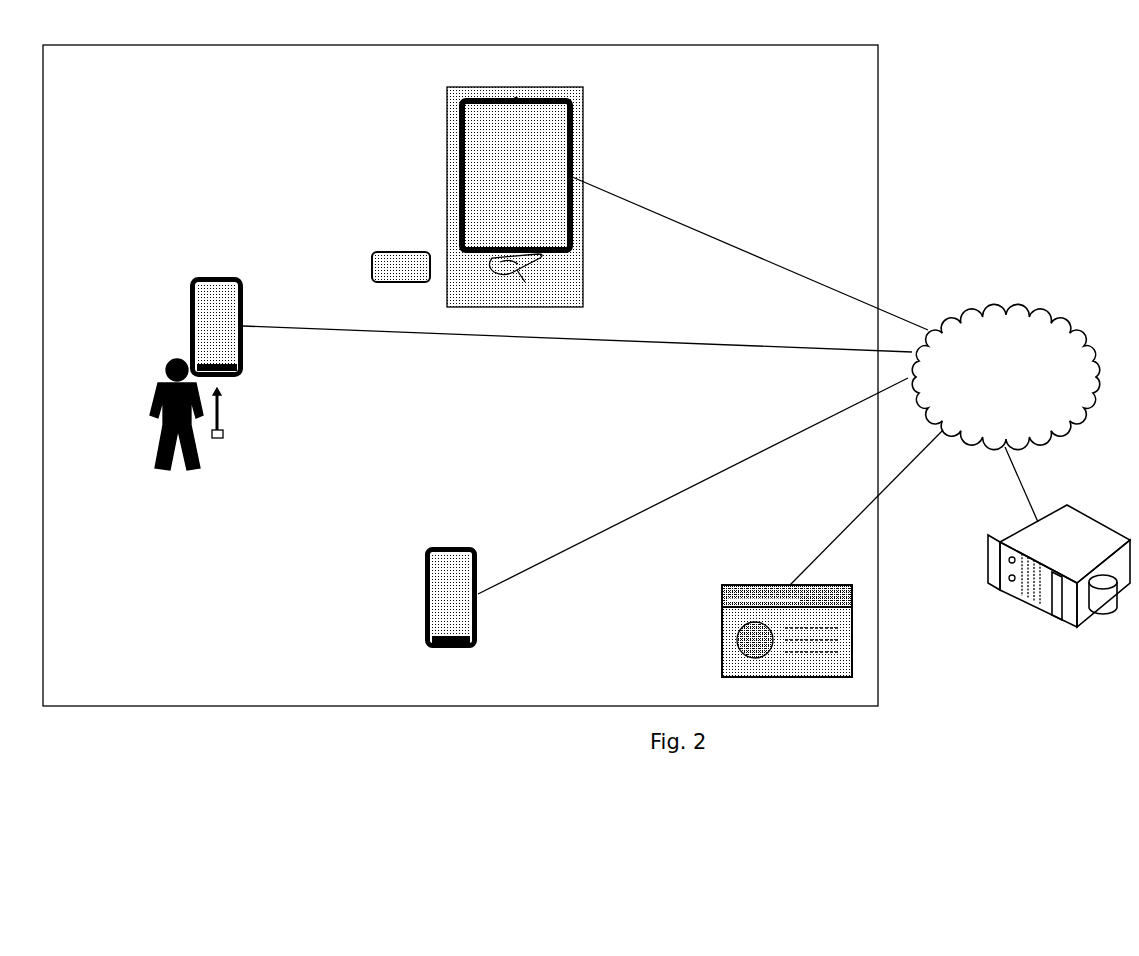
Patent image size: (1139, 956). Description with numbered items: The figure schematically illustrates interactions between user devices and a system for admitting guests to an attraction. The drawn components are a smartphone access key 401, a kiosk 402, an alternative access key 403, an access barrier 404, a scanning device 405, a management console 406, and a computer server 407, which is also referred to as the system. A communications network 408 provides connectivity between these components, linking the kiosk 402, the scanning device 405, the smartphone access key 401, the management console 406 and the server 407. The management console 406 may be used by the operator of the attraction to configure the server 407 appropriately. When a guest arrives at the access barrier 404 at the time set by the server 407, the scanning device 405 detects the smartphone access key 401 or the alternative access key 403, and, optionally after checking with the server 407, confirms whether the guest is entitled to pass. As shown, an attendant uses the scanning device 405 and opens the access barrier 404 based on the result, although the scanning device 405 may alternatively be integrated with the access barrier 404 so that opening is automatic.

The smartphone access key 401 is at (462, 648).
The kiosk 402 is at (582, 267).
The alternative access key 403 is at (397, 252).
The access barrier 404 is at (212, 440).
The scanning device 405 is at (228, 275).
The management console 406 is at (722, 622).
The server 407 is at (1027, 593).
The communications network 408 is at (1007, 310).